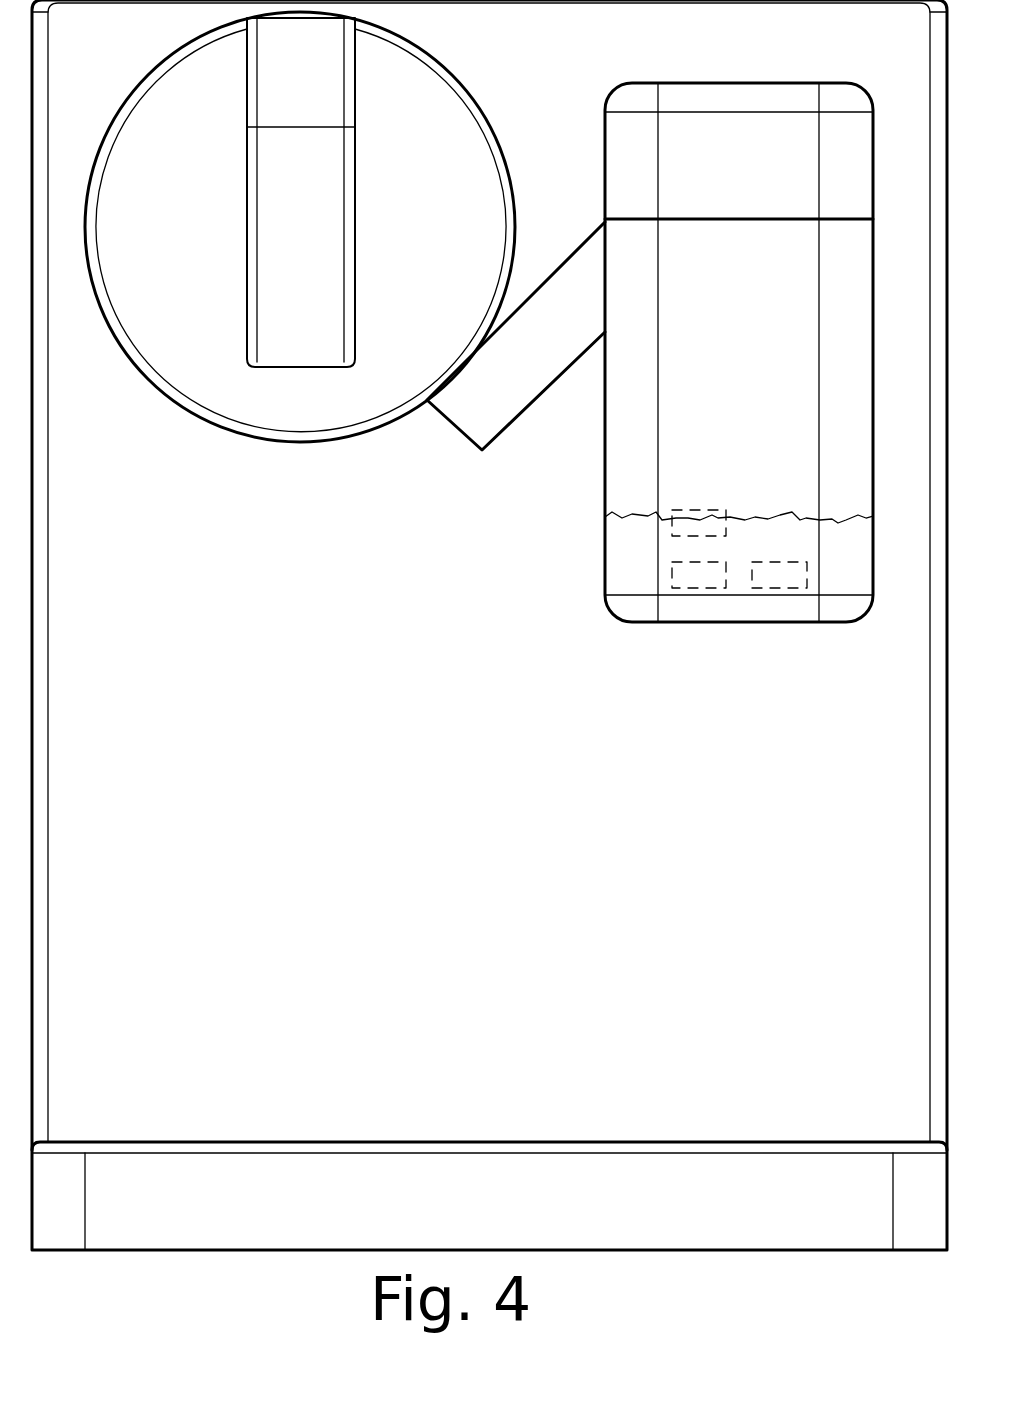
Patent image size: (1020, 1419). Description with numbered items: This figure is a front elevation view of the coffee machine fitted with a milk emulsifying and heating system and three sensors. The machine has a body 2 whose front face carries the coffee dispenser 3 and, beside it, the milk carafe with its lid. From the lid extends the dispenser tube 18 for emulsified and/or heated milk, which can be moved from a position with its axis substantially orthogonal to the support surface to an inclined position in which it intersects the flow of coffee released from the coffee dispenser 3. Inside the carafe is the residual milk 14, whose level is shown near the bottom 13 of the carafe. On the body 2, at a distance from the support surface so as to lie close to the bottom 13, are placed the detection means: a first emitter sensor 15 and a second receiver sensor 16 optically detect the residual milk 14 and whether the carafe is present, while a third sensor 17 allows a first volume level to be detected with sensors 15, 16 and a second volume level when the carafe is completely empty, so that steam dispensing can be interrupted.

The body 2 is at (475, 833).
The coffee dispenser 3 is at (299, 301).
The bottom of the carafe 13 is at (638, 623).
The milk 14 is at (622, 558).
The first emitter sensor 15 is at (706, 573).
The second receiver sensor 16 is at (786, 573).
The third sensor 17 is at (683, 510).
The dispenser tube 18 is at (488, 402).